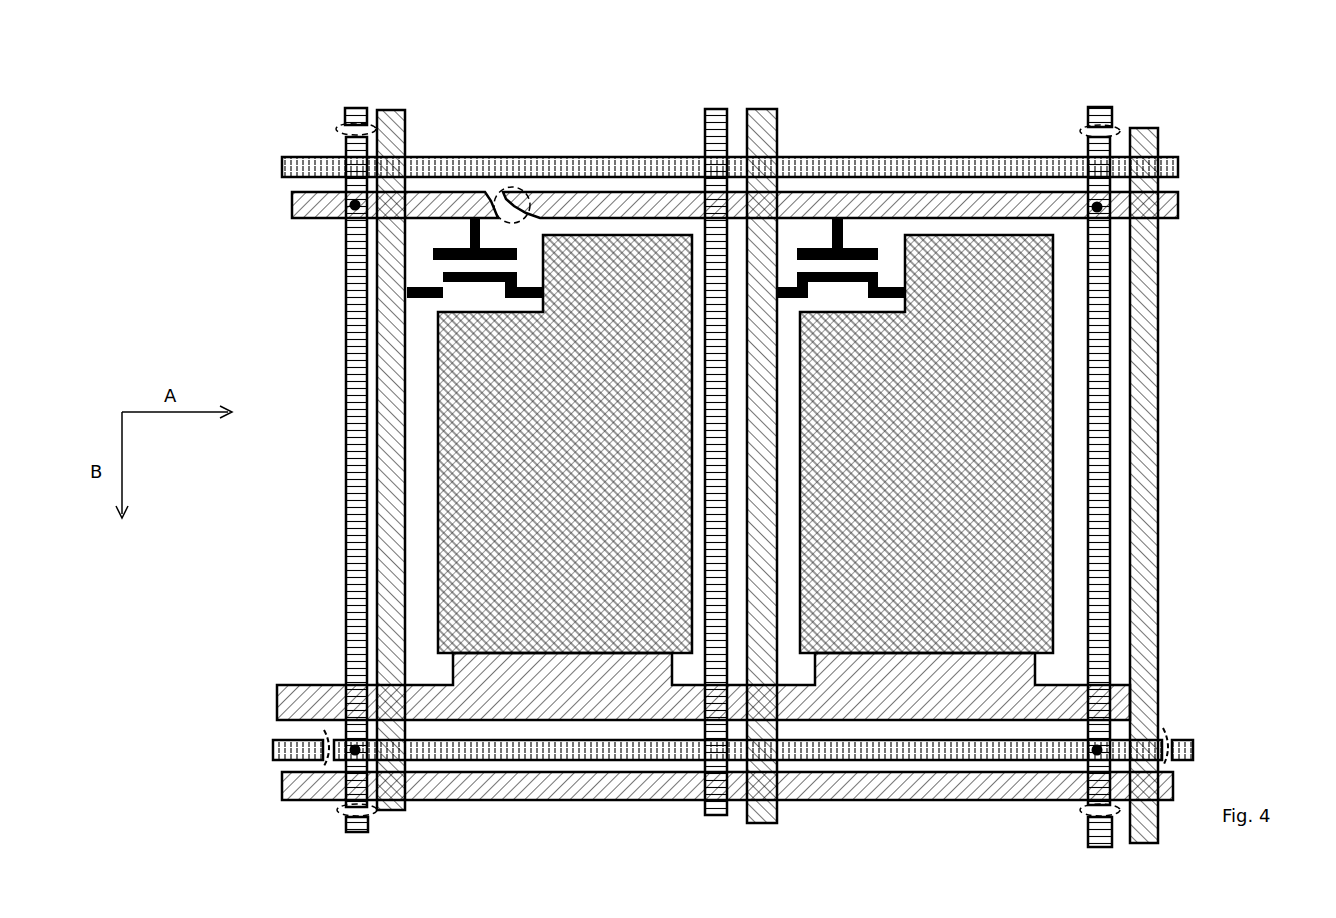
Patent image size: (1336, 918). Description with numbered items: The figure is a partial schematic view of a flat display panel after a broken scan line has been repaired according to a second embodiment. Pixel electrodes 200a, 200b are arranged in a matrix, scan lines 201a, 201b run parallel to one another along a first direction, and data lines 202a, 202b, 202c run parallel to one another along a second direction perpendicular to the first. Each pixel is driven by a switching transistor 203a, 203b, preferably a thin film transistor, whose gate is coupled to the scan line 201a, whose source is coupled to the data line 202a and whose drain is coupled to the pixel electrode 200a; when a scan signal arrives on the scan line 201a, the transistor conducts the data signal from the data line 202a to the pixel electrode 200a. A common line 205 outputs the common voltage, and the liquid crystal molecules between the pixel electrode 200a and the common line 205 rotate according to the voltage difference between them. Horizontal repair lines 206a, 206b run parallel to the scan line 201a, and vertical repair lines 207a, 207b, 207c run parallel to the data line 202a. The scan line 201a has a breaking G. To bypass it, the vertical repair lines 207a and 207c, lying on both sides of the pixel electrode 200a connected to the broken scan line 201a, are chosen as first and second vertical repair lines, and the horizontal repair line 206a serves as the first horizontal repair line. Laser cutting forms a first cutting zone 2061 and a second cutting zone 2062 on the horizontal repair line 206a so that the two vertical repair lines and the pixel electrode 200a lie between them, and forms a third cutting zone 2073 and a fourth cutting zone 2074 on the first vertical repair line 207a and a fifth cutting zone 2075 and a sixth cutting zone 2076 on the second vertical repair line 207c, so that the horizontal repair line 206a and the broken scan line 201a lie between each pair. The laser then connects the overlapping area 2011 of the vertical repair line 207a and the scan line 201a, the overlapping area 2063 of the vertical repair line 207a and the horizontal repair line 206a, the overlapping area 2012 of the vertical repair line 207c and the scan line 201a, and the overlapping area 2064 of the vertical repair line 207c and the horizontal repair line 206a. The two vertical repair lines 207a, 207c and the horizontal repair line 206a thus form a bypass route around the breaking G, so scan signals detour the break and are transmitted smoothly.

The pixel electrode 200a is at (477, 425).
The pixel electrode 200b is at (1037, 430).
The scan line 201a is at (293, 203).
The scan line 201b is at (290, 790).
The overlapping area 2011 is at (349, 207).
The overlapping area 2012 is at (1092, 204).
The data line 202a is at (390, 305).
The data line 202b is at (760, 795).
The third data line 202c is at (1145, 817).
The switching transistor 203a is at (442, 298).
The switching transistor 203b is at (858, 248).
The common line 205 is at (440, 690).
The horizontal repair line 206a is at (283, 158).
The horizontal repair line 206b is at (292, 752).
The first cutting zone 2061 is at (323, 728).
The second cutting zone 2062 is at (1175, 732).
The overlapping area 2063 is at (343, 815).
The overlapping area 2064 is at (1100, 748).
The first vertical repair line 207a is at (363, 408).
The vertical repair line 207b is at (713, 797).
The second vertical repair line 207c is at (1088, 837).
The third cutting zone 2073 is at (368, 122).
The fourth cutting zone 2074 is at (353, 755).
The fifth cutting zone 2075 is at (1087, 128).
The sixth cutting zone 2076 is at (1100, 817).
The breaking G is at (511, 188).